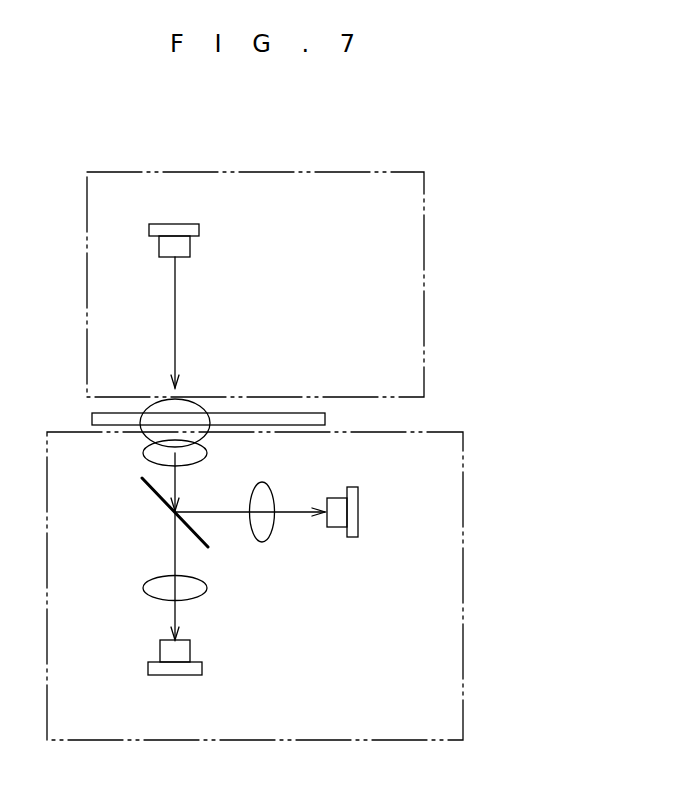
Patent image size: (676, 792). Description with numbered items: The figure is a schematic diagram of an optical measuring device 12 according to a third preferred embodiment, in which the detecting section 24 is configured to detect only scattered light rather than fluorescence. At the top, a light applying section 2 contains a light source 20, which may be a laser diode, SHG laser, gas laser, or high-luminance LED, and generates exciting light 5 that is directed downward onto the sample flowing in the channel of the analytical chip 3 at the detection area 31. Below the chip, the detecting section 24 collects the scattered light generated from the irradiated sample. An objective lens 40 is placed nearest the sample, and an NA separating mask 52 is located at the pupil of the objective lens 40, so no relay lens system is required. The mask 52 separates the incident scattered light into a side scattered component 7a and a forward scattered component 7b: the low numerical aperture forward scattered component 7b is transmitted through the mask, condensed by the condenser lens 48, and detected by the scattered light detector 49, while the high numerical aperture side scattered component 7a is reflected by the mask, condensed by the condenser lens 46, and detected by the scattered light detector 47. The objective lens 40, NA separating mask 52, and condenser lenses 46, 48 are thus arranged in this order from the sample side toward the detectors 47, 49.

The optical measuring device 12 is at (292, 237).
The light applying section 2 is at (424, 231).
The light source 20 is at (199, 231).
The exciting light 5 is at (176, 320).
The detection area 31 is at (150, 405).
The analytical chip 3 is at (325, 419).
The objective lens 40 is at (207, 455).
The detecting section 24 is at (463, 515).
The NA separating mask 52 is at (148, 483).
The forward scattered component 7b is at (174, 540).
The side scattered component 7a is at (300, 513).
The condenser lens 46 is at (262, 542).
The scattered light detector 47 is at (353, 537).
The condenser lens 48 is at (143, 588).
The scattered light detector 49 is at (147, 668).